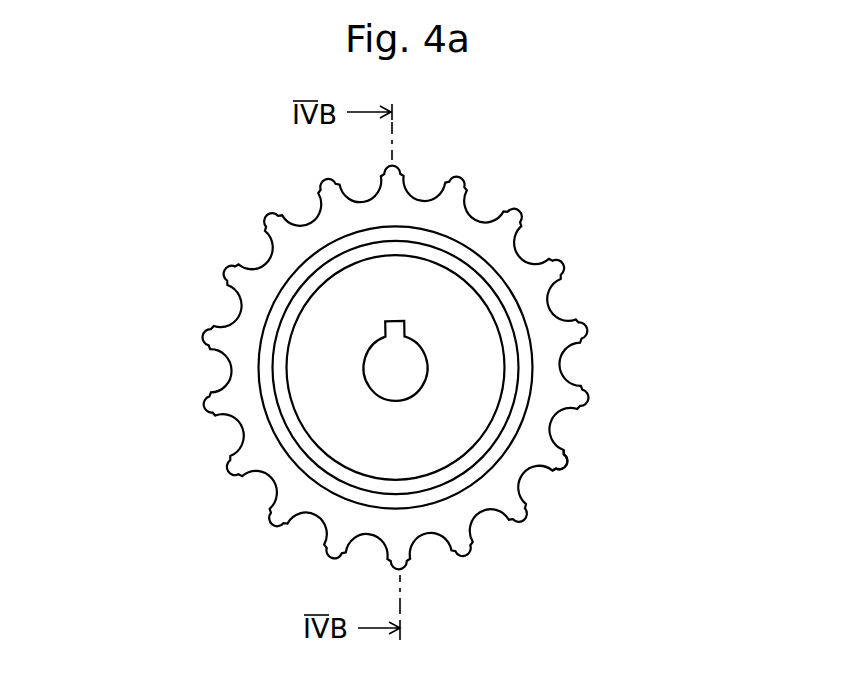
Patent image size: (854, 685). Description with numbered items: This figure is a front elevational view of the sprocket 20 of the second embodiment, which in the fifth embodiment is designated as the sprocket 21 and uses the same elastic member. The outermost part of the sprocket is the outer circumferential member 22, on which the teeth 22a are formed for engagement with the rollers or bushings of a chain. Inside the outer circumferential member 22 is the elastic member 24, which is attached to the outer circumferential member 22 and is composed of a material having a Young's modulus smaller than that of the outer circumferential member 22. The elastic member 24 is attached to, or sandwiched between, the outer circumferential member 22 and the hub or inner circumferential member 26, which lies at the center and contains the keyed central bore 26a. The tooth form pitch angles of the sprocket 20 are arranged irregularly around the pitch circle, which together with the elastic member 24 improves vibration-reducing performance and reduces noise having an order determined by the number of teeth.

The sprocket 20 is at (395, 377).
The sprocket 21 is at (419, 377).
The outer circumferential member 22 is at (545, 416).
The teeth 22a is at (564, 468).
The elastic member 24 is at (524, 364).
The inner circumferential member 26 is at (452, 303).
The keyed hub bore 26a is at (418, 356).